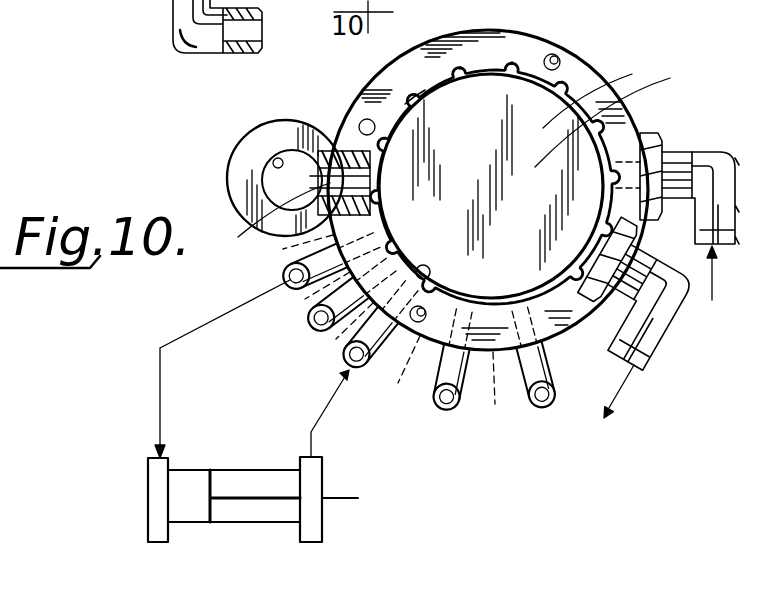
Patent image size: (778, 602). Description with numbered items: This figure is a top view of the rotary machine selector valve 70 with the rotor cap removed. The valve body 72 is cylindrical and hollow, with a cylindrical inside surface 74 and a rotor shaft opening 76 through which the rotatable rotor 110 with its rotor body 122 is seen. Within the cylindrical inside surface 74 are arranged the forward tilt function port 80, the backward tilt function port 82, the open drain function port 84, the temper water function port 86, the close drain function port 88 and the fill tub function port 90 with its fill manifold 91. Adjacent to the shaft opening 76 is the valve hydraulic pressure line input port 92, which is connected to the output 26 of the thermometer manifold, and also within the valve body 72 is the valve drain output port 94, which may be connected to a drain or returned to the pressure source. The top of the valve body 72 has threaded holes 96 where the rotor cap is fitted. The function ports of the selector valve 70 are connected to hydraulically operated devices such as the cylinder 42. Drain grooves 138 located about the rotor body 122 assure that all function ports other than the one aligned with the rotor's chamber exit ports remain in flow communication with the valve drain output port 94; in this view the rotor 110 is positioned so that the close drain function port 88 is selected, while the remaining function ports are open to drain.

The output of thermometer manifold 26 is at (217, 26).
The cylinder 42 is at (258, 470).
The rotary machine selector valve 70 is at (600, 68).
The valve body 72 is at (390, 80).
The cylindrical inside surface 74 is at (407, 100).
The rotor shaft opening 76 is at (514, 63).
The forward tilt function port 80 is at (522, 323).
The backward tilt function port 82 is at (437, 347).
The open drain function port 84 is at (336, 350).
The temper water function port 86 is at (310, 308).
The close drain function port 88 is at (285, 262).
The fill tub function port 90 is at (340, 165).
The fill manifold 91 is at (276, 160).
The valve hydraulic pressure line input port 92 is at (620, 162).
The valve drain output port 94 is at (608, 302).
The threaded holes 96 is at (553, 54).
The rotor 110 is at (617, 90).
The rotor body 122 is at (676, 72).
The drain grooves 138 is at (431, 274).